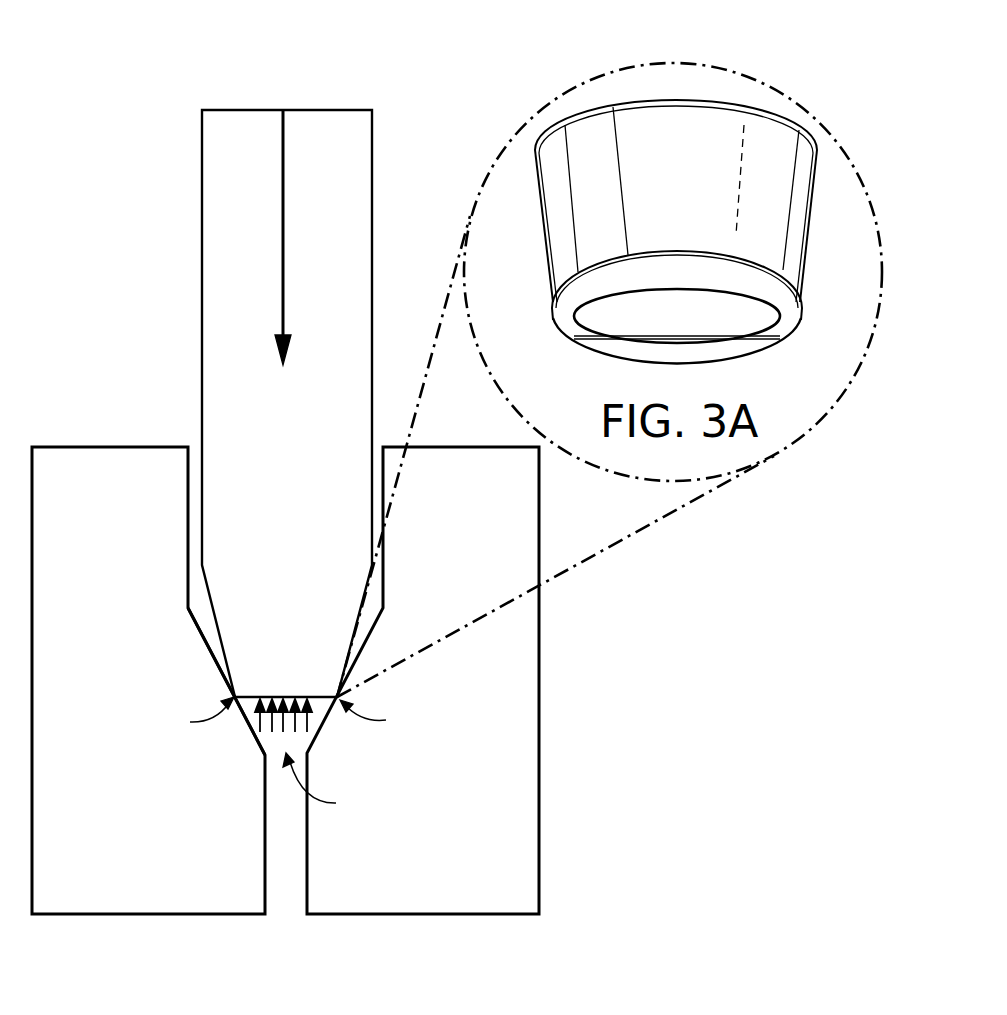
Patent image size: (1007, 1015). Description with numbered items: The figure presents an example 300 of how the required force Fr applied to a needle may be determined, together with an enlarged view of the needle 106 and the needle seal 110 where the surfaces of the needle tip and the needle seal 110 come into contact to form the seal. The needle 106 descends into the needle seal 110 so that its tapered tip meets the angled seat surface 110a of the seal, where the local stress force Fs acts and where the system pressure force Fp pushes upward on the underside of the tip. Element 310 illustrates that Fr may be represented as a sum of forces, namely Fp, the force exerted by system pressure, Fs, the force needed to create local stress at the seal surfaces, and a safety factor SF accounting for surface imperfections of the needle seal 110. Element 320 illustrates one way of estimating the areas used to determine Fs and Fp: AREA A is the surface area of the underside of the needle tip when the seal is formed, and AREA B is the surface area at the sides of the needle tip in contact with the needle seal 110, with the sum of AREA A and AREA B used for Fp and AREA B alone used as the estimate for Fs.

In FIG. 3, the example 300 is at (149, 70).
In FIG. 3, the needle 106 is at (330, 110).
In FIG. 3, the needle seal 110 is at (131, 846).
In FIG. 3, the angled die surface 110a is at (200, 594).
In FIG. 3, the element 310 is at (636, 1013).
In FIG. 3, the element 320 is at (615, 72).
In FIG. 3A, the AREA A is at (633, 348).
In FIG. 3A, the AREA B is at (657, 290).